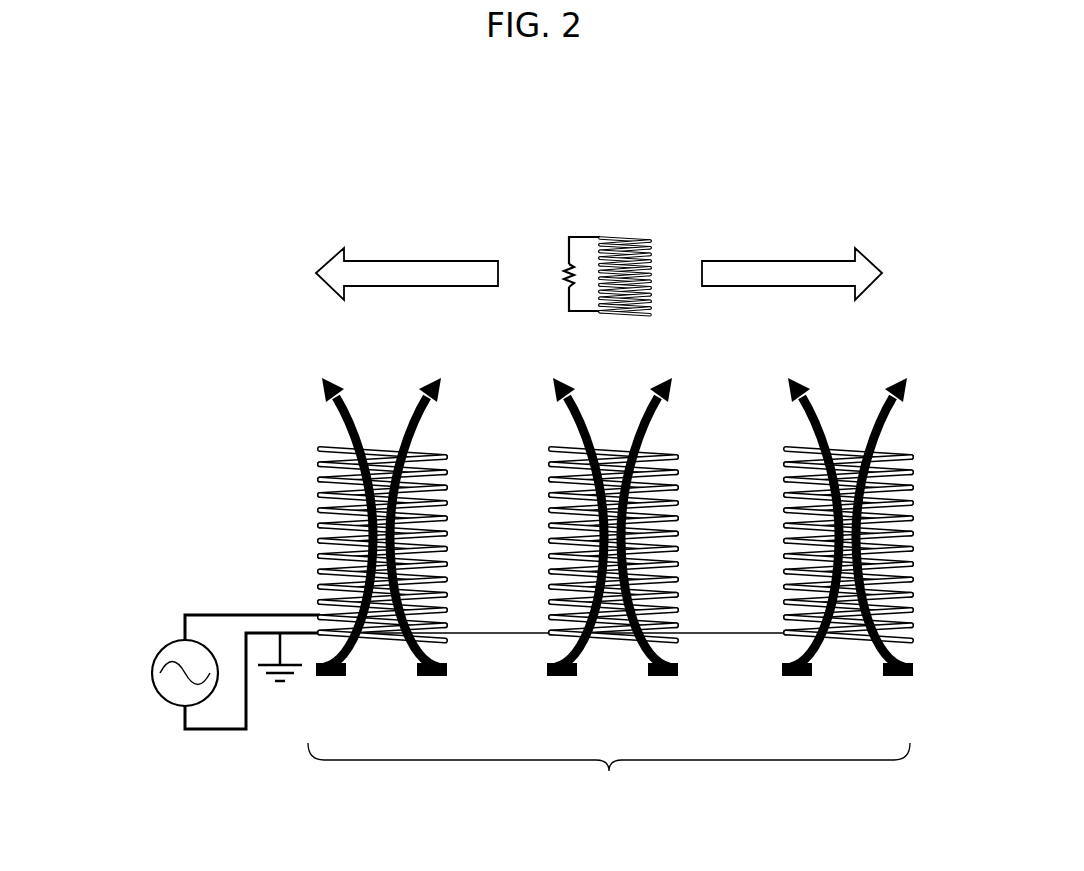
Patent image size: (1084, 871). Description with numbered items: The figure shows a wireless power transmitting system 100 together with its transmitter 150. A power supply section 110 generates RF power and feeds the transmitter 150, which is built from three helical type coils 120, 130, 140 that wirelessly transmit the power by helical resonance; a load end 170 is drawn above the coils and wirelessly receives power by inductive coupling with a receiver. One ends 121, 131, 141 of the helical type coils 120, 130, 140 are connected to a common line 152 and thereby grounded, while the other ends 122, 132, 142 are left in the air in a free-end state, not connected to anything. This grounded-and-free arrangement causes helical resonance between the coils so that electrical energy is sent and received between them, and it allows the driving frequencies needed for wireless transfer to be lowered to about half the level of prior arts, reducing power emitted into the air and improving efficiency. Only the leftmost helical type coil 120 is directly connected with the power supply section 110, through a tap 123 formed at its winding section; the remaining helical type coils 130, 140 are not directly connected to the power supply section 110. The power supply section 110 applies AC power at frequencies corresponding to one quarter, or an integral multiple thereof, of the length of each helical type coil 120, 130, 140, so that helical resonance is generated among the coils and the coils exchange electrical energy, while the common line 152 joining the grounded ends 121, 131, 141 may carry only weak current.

The wireless power transmitting system 100 is at (522, 165).
The power supply section 110 is at (176, 640).
The helical type coil 120 is at (300, 526).
The one end of helical type coil 121 is at (322, 650).
The other end of helical type coil 122 is at (318, 449).
The tap 123 is at (318, 614).
The helical type coil 130 is at (532, 526).
The one end of helical type coil 131 is at (551, 632).
The other end of helical type coil 132 is at (550, 449).
The helical type coil 140 is at (772, 526).
The one end of helical type coil 141 is at (787, 632).
The other end of helical type coil 142 is at (786, 448).
The transmitter 150 is at (570, 588).
The common line 152 is at (493, 634).
The load end 170 is at (637, 228).